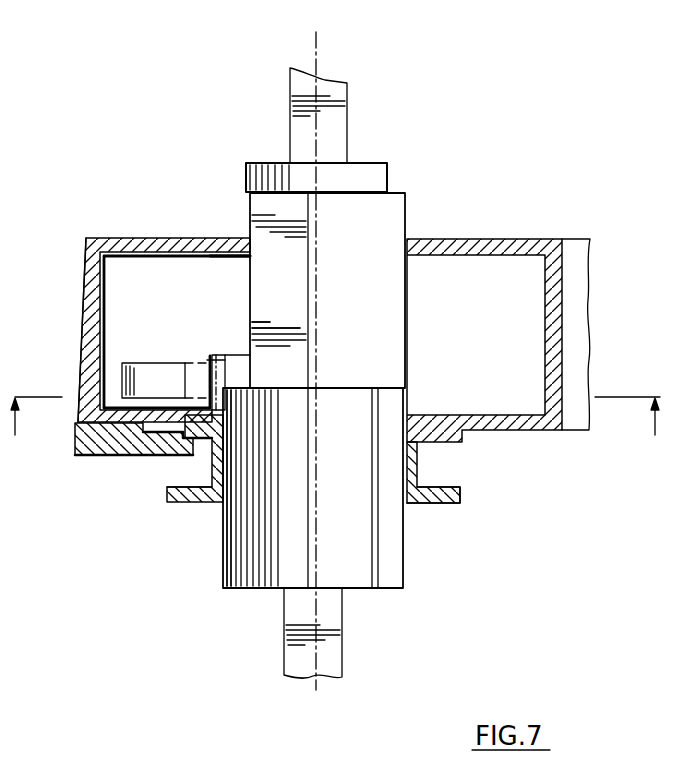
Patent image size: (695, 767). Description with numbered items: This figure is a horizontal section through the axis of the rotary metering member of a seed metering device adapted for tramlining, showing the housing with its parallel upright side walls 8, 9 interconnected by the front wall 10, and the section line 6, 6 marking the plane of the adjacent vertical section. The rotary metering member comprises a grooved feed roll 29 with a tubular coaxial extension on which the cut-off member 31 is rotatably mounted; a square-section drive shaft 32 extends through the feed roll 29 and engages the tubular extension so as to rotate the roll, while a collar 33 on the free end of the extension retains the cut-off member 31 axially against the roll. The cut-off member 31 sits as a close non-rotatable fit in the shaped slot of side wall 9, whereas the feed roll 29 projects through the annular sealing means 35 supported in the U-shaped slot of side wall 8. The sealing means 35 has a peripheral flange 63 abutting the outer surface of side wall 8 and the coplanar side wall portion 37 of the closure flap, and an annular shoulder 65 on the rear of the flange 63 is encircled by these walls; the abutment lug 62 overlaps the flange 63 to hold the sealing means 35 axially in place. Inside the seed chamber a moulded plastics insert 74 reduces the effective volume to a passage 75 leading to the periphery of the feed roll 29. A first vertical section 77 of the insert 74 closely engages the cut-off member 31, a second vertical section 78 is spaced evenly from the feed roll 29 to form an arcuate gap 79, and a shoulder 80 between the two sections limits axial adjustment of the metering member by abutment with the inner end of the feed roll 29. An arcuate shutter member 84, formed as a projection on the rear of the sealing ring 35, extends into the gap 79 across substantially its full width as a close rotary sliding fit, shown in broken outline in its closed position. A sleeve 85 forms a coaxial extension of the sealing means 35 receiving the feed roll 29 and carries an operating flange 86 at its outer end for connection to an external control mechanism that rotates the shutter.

The section line 6- 6 is at (335, 401).
The side wall 8 is at (83, 457).
The side wall 9 is at (118, 236).
The front wall 10 is at (83, 308).
The feed roll 29 is at (272, 570).
The cut-off member 31 is at (407, 210).
The drive shaft 32 is at (333, 618).
The collar 33 is at (373, 165).
The annular sealing means 35 is at (156, 516).
The side wall portion 37 is at (520, 437).
The abutment lug 62 is at (108, 458).
The peripheral flange 63 is at (182, 428).
The annular shoulder 65 is at (218, 423).
The insert 74 is at (143, 268).
The passage 75 is at (130, 342).
The first vertical section 77 is at (237, 272).
The second vertical section 78 is at (177, 402).
The arcuate gap 79 is at (228, 354).
The shoulder 80 is at (250, 360).
The arcuate shutter member 84 is at (213, 345).
The sleeve 85 is at (420, 470).
The operating flange 86 is at (447, 505).